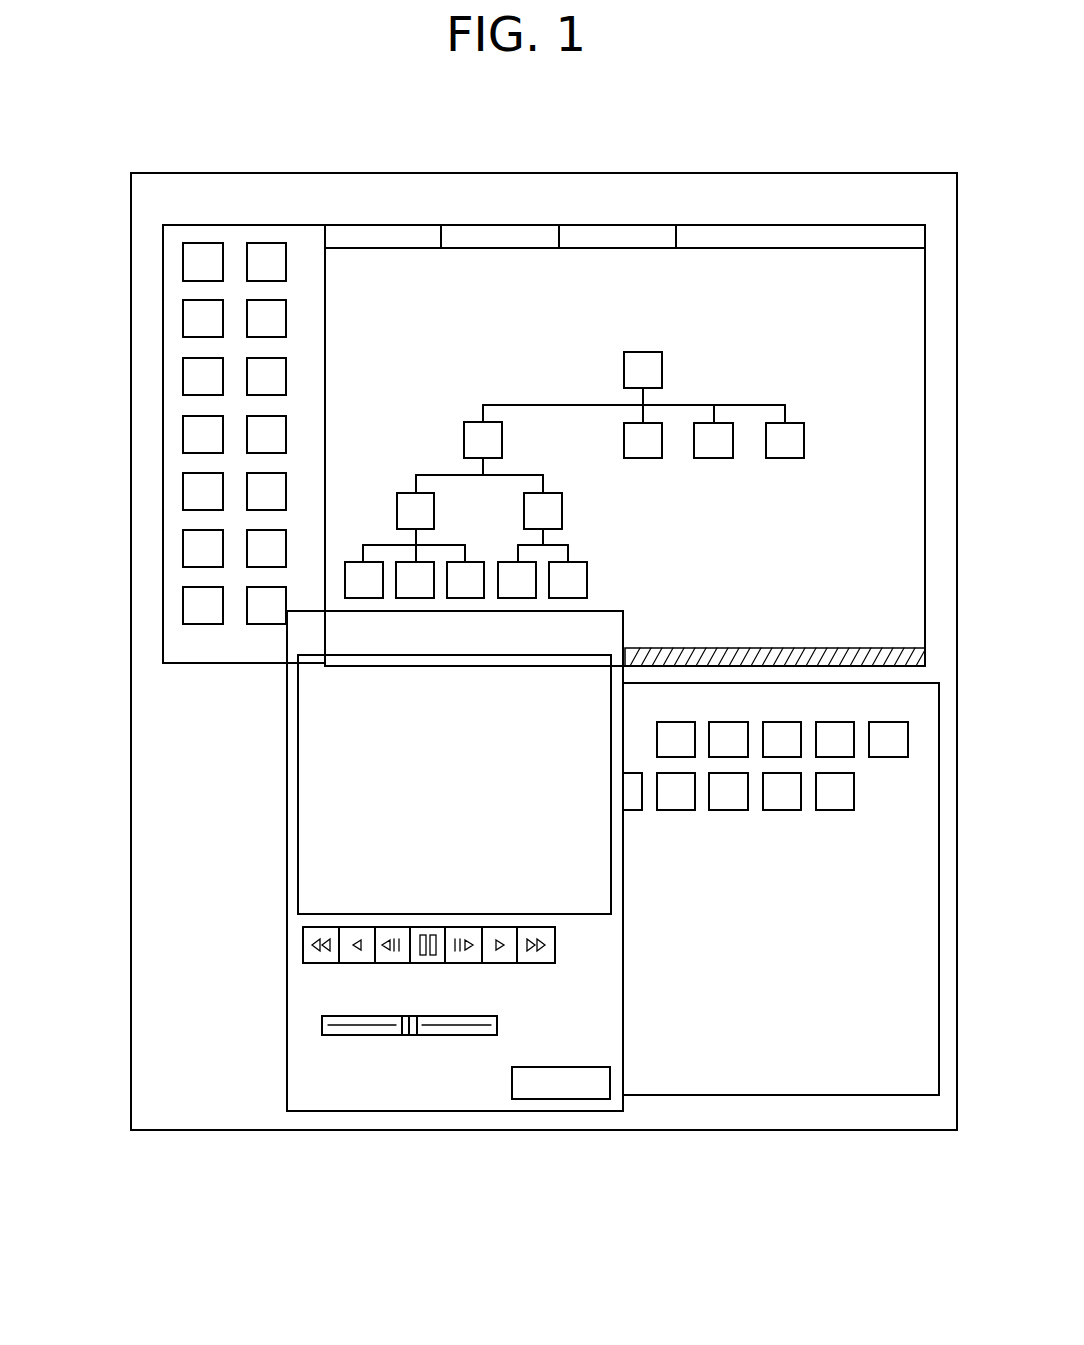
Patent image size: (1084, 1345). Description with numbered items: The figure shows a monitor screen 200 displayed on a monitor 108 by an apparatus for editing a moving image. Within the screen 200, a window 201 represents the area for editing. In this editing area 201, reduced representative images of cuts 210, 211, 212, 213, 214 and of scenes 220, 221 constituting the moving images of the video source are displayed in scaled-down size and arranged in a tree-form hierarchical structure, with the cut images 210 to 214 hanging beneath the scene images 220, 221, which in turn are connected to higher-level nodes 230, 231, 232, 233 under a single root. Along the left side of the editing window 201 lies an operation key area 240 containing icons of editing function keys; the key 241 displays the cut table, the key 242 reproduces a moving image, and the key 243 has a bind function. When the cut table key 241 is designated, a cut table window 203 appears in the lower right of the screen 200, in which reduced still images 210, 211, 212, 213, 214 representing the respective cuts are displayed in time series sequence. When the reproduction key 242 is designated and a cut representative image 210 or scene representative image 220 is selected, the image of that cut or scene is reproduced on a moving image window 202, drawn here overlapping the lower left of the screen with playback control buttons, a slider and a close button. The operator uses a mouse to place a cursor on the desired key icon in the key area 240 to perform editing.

The monitor 108 is at (840, 114).
The monitor screen 200 is at (638, 1131).
The window (area for editing) 201 is at (813, 227).
The moving image window 202 is at (588, 916).
The cut table window 203 is at (810, 1095).
The operation key area 240 is at (226, 232).
The key for displaying cut table 241 is at (185, 262).
The key for reproducing moving image 242 is at (185, 320).
The key having bind function 243 is at (185, 376).
The cut representative image 210 is at (355, 562).
The cut representative image 211 is at (420, 562).
The cut representative image 212 is at (476, 562).
The cut representative image 213 is at (530, 562).
The cut representative image 214 is at (588, 578).
The scene representative image 220 is at (405, 493).
The scene representative image 221 is at (552, 493).
The scene group node 230 is at (464, 436).
The scene group node 231 is at (645, 458).
The scene group node 232 is at (716, 458).
The scene group node 233 is at (787, 458).